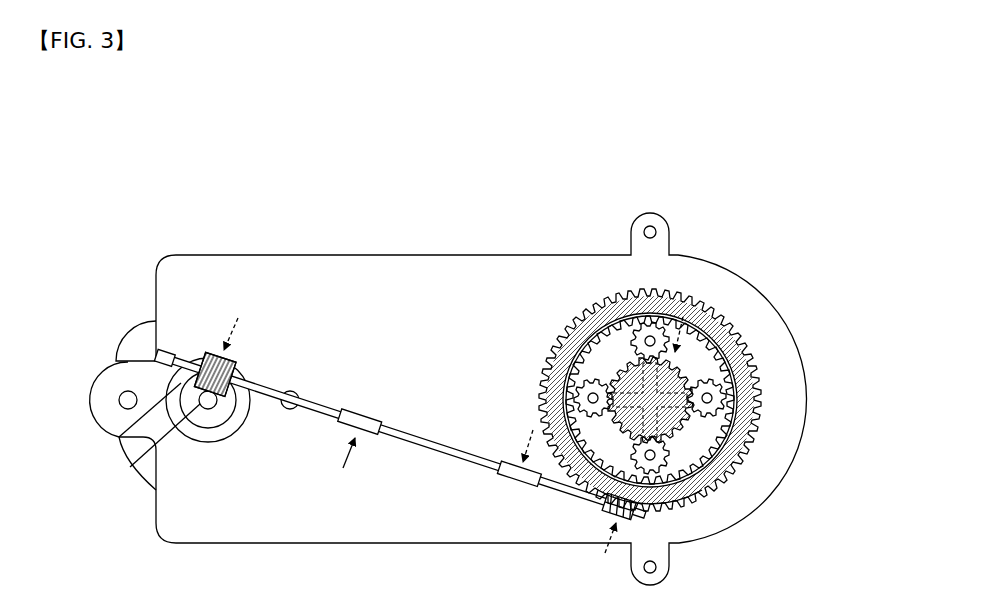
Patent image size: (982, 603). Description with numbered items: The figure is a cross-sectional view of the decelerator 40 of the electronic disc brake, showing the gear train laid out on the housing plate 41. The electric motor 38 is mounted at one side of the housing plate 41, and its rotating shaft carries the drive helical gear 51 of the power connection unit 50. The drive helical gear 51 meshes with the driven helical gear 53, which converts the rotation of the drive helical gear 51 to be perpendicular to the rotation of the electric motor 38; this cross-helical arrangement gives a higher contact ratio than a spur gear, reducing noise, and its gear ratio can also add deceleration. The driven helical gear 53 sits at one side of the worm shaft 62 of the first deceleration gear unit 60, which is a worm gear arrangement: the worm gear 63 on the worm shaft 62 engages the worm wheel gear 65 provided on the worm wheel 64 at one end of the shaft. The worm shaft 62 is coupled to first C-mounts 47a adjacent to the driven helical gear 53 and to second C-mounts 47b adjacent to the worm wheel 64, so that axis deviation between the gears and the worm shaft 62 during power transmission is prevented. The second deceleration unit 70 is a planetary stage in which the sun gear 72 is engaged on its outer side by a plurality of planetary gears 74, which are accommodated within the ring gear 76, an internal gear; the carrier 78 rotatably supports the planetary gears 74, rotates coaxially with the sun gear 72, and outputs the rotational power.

The electric motor 38 is at (142, 342).
The decelerator 40 is at (221, 124).
The housing plate 41 is at (293, 265).
The first C-mounts 47a is at (366, 422).
The second C-mounts 47b is at (513, 482).
The power connection unit 50 is at (142, 424).
The drive helical gear 51 is at (78, 432).
The driven helical gear 53 is at (118, 438).
The first deceleration gear unit 60 is at (687, 406).
The worm shaft 62 is at (400, 434).
The worm gear 63 is at (603, 508).
The worm wheel 64 is at (715, 472).
The worm wheel gear 65 is at (697, 497).
The second deceleration unit 70 is at (712, 308).
The sun gear 72 is at (700, 375).
The planetary gears 74 is at (753, 393).
The ring gear 76 is at (717, 345).
The carrier 78 is at (748, 430).